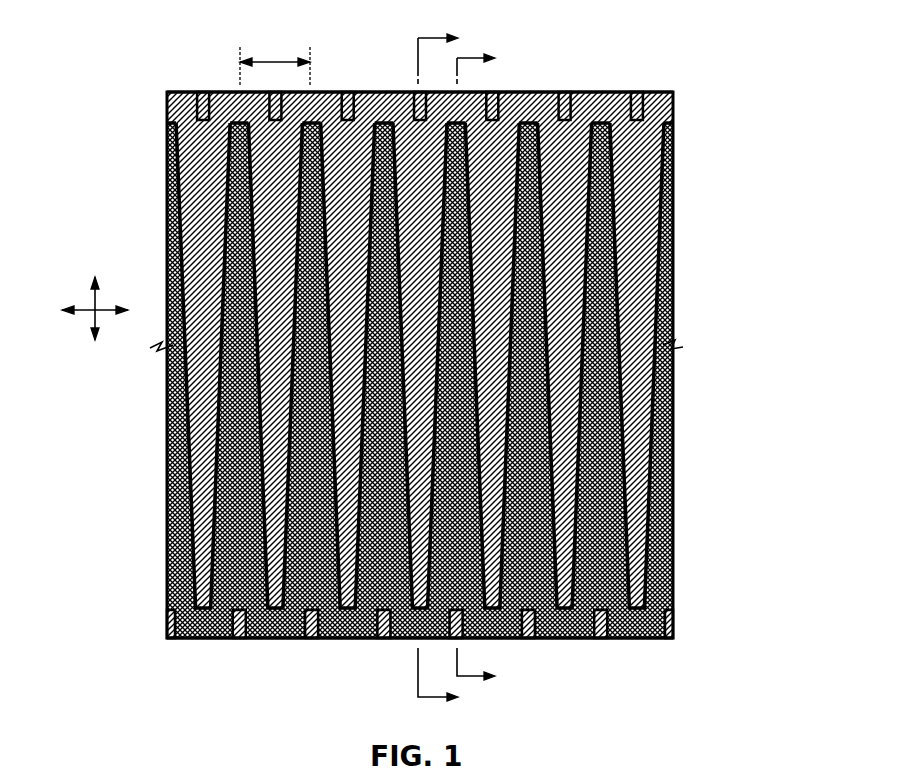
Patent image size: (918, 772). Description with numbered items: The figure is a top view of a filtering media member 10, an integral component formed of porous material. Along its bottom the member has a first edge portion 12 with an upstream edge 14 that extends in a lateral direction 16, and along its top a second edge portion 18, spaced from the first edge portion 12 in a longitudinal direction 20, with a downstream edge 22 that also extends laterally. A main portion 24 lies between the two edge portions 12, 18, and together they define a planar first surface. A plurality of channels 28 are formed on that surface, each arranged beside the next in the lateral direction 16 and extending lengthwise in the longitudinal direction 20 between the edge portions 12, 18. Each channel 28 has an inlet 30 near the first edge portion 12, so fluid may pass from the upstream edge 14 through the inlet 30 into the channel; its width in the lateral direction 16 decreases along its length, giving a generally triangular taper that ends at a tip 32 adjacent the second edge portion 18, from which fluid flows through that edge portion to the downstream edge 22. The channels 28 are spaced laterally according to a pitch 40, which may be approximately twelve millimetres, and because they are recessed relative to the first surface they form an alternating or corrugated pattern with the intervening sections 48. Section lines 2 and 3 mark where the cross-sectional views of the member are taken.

The filtering media member 10 is at (619, 62).
The first edge portion 12 is at (673, 609).
The upstream edge 14 is at (554, 652).
The lateral direction 16 is at (80, 316).
The second edge portion 18 is at (673, 93).
The longitudinal direction 20 is at (90, 302).
The downstream edge 22 is at (546, 82).
The main portion 24 is at (725, 609).
The channels 28 is at (387, 532).
The inlet 30 is at (370, 620).
The tip 32 is at (373, 129).
The pitch 40 is at (273, 62).
The sections 48 is at (345, 438).
The section line 2- 2 is at (484, 368).
The section line 3- 3 is at (446, 368).